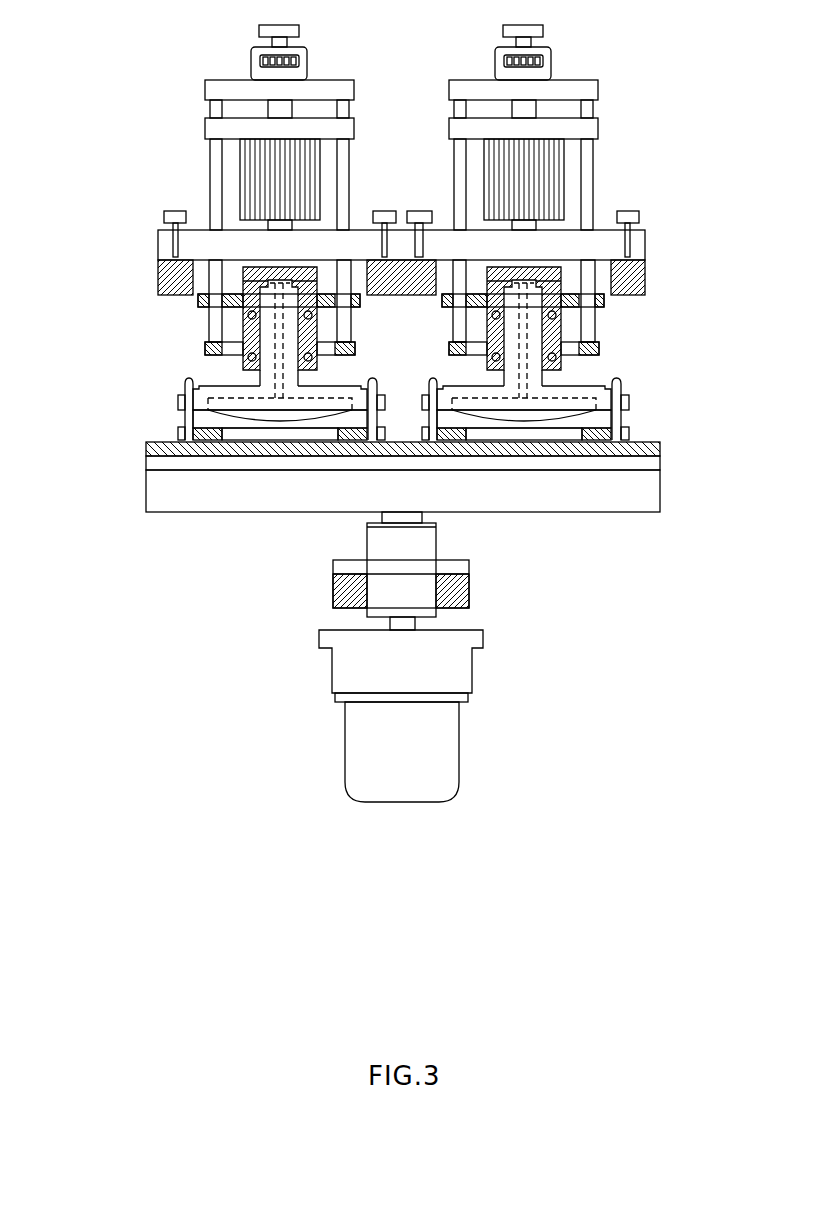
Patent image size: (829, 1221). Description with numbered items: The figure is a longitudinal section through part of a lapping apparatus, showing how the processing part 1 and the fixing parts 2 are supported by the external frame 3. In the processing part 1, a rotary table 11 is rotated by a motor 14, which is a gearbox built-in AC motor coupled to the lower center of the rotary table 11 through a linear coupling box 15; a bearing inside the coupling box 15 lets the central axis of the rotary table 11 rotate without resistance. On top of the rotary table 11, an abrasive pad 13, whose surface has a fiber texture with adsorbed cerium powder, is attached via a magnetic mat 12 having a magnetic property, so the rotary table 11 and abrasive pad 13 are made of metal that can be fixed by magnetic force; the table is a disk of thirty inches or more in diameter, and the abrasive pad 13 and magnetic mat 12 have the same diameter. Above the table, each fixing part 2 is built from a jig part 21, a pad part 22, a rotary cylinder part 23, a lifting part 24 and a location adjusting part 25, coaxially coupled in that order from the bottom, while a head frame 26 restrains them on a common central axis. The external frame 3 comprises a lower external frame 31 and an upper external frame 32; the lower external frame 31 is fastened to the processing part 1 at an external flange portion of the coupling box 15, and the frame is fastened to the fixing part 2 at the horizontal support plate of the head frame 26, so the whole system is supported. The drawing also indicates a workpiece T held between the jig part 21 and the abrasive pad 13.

The processing part 1 is at (62, 450).
The fixing part 2 is at (62, 33).
The external frame 3 is at (737, 272).
The rotary table 11 is at (146, 490).
The magnetic mat 12 is at (146, 463).
The abrasive pad 13 is at (146, 446).
The motor 14 is at (332, 668).
The coupling box 15 is at (367, 543).
The jig part 21 is at (178, 436).
The pad part 22 is at (250, 391).
The rotary cylinder part 23 is at (243, 322).
The lifting part 24 is at (240, 180).
The location adjusting part 25 is at (259, 30).
The head frame 26 is at (158, 240).
The lower external frame 31 is at (469, 587).
The upper external frame 32 is at (646, 273).
The sample T is at (280, 436).